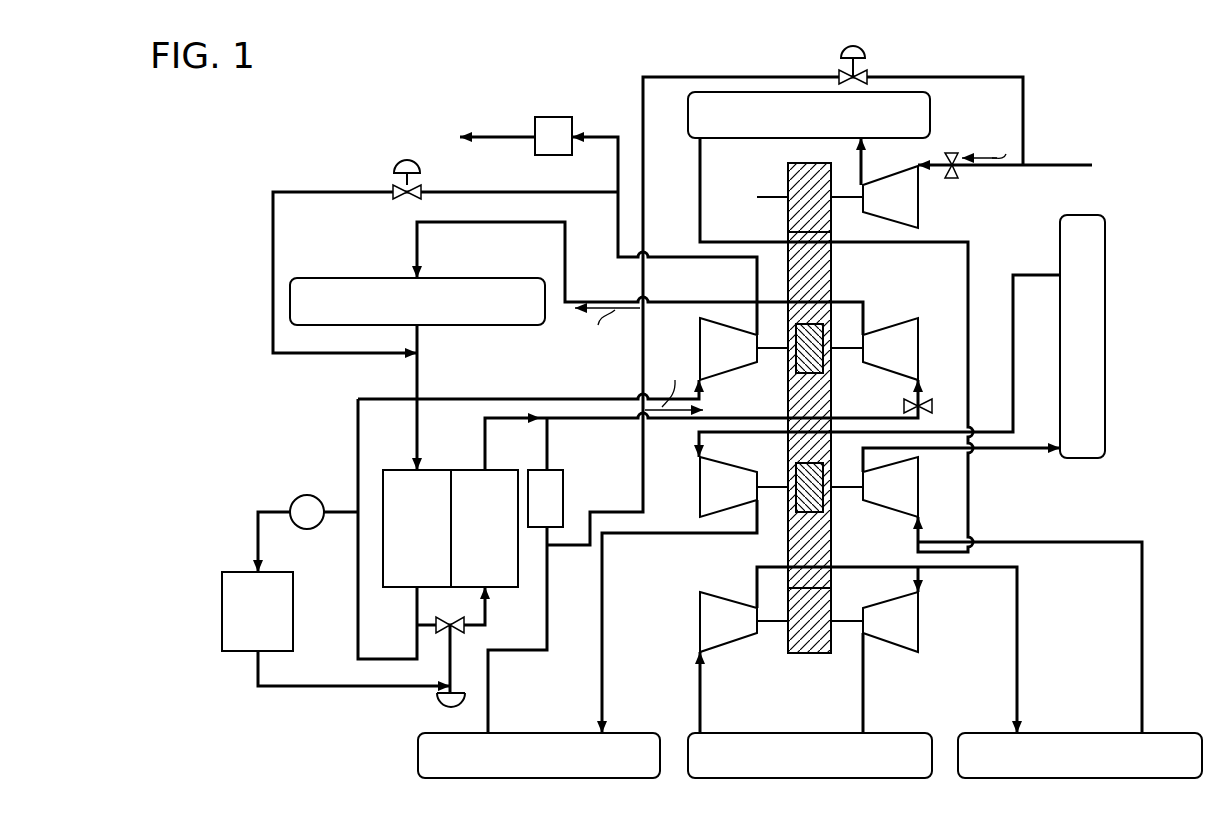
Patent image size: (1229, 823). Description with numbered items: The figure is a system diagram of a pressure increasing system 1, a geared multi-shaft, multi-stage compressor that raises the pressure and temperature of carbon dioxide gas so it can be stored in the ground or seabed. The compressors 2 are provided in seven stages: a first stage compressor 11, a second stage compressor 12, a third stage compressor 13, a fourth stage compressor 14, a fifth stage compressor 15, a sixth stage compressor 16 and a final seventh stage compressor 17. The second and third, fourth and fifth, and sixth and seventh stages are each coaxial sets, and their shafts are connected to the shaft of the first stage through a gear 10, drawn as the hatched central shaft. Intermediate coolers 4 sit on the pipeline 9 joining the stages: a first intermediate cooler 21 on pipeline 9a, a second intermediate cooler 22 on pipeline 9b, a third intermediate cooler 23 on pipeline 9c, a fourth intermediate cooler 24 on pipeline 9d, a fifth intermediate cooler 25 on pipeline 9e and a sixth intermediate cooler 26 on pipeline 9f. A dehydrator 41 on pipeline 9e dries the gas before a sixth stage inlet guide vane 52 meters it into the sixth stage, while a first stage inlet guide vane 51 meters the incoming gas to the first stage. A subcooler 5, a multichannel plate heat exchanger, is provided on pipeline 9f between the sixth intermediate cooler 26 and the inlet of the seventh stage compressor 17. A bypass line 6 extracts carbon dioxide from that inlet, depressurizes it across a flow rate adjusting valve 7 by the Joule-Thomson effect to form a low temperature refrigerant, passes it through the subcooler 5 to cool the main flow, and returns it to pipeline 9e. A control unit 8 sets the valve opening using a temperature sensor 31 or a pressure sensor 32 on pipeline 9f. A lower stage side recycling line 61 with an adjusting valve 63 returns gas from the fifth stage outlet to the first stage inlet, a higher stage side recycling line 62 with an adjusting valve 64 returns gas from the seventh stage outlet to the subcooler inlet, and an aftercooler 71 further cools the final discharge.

The pressure increasing system 1 is at (1152, 148).
The compressors 2 is at (853, 426).
The intermediate coolers 4 is at (746, 435).
The subcooler 5 is at (383, 482).
The bypass line 6 is at (468, 630).
The flow rate adjusting valve 7 is at (445, 707).
The control unit 8 is at (240, 572).
The pipeline 9 is at (750, 426).
The pipeline 9a is at (968, 492).
The pipeline 9b is at (863, 667).
The pipeline 9c is at (1017, 638).
The pipeline 9d is at (1036, 455).
The pipeline 9e is at (602, 630).
The pipeline 9f is at (597, 281).
The gear 10 is at (788, 183).
The first stage compressor 11 is at (920, 197).
The second stage compressor 12 is at (920, 622).
The third stage compressor 13 is at (730, 648).
The fourth stage compressor 14 is at (920, 497).
The fifth stage compressor 15 is at (700, 487).
The sixth stage compressor 16 is at (883, 328).
The seventh stage compressor 17 is at (730, 328).
The first intermediate cooler 21 is at (930, 112).
The second intermediate cooler 22 is at (757, 733).
The third intermediate cooler 23 is at (1078, 733).
The fourth intermediate cooler 24 is at (1105, 335).
The fifth intermediate cooler 25 is at (535, 733).
The sixth intermediate cooler 26 is at (470, 325).
The temperature sensor 31 is at (307, 495).
The pressure sensor 32 is at (301, 485).
The dehydrator 41 is at (563, 505).
The first stage inlet guide vane 51 is at (958, 172).
The sixth stage inlet guide vane 52 is at (904, 406).
The lower stage side recycling line 61 is at (950, 77).
The higher stage side recycling line 62 is at (322, 192).
The adjusting valve 63 is at (862, 50).
The adjusting valve 64 is at (407, 160).
The aftercooler 71 is at (552, 117).